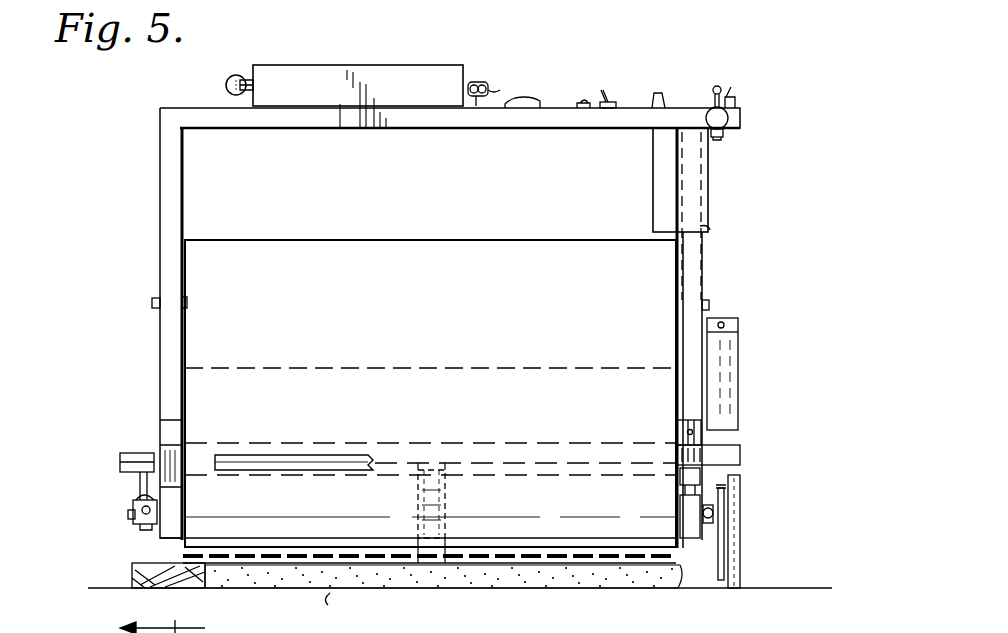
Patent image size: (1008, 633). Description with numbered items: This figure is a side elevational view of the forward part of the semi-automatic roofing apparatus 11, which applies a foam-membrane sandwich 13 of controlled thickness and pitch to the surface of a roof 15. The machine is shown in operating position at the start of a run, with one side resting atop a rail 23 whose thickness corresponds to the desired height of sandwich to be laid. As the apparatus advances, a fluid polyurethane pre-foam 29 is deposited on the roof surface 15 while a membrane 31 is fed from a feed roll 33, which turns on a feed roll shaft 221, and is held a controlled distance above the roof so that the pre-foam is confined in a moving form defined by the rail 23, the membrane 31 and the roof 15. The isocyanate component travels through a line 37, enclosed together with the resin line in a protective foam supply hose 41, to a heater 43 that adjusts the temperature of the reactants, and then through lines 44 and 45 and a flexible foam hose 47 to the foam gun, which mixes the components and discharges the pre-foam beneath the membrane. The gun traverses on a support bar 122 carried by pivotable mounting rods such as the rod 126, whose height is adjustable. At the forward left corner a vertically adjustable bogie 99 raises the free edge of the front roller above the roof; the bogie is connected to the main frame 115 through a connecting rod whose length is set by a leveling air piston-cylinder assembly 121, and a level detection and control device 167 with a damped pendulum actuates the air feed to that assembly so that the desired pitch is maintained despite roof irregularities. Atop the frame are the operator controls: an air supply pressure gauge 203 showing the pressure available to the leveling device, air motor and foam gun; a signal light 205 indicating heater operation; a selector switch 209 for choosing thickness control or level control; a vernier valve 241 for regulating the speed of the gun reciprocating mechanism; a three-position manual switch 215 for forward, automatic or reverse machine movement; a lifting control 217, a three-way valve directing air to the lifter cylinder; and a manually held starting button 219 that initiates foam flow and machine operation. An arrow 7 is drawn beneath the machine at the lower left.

The direction arrow 7 is at (169, 624).
The semi-automatic apparatus 11 is at (691, 180).
The foam-membrane sandwich 13 is at (495, 600).
The roof 15 is at (808, 588).
The rail 23 is at (132, 583).
The pre-foam 29 is at (347, 610).
The membrane 31 is at (563, 262).
The feed roll 33 is at (328, 372).
The line 37 is at (240, 90).
The protective foam supply hose 41 is at (225, 84).
The heater 43 is at (391, 70).
The line 44 is at (476, 80).
The line 45 is at (494, 89).
The foam hose 47 is at (490, 80).
The bogie 99 is at (745, 495).
The main frame 115 is at (885, 629).
The leveling air piston-cylinder assembly 121 is at (728, 374).
The support bar 122 is at (223, 462).
The pivotable mounting rod 126 is at (140, 482).
The level detection and control device 167 is at (710, 224).
The air supply pressure gauge 203 is at (520, 106).
The signal light 205 is at (583, 105).
The selector switch 209 is at (611, 100).
The switch 215 is at (740, 96).
The lifting control 217 is at (717, 84).
The starting button 219 is at (731, 140).
The feed roll shaft 221 is at (152, 302).
The vernier valve 241 is at (655, 92).